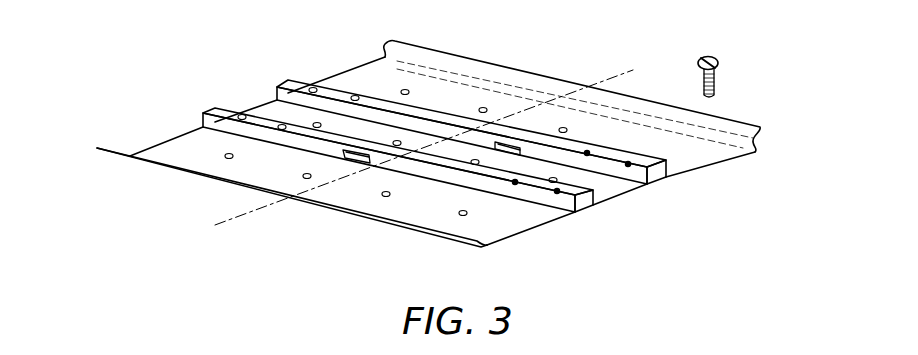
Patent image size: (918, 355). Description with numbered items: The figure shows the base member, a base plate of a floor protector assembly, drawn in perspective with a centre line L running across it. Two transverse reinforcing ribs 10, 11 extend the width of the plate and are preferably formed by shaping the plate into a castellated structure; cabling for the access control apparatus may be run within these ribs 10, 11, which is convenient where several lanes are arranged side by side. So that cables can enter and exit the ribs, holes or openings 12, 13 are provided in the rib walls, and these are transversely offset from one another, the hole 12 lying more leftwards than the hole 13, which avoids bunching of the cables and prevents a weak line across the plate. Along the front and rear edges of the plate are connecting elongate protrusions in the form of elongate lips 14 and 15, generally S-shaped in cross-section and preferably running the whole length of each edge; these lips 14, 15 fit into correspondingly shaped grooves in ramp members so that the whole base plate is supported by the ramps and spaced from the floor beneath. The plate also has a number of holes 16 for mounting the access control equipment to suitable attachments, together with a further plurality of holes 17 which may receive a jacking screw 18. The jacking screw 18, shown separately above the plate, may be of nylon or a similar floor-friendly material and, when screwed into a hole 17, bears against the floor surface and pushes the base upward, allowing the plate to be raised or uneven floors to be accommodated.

The transverse reinforcing rib 10 is at (215, 108).
The transverse reinforcing rib 11 is at (289, 80).
The hole or opening in rib 12 is at (344, 159).
The hole or opening in rib 13 is at (504, 147).
The elongate lip 14 is at (474, 243).
The elongate lip 15 is at (762, 145).
The holes 16 is at (588, 152).
The holes 17 is at (563, 128).
The jacking screw 18 is at (720, 62).
The centre line L is at (415, 155).